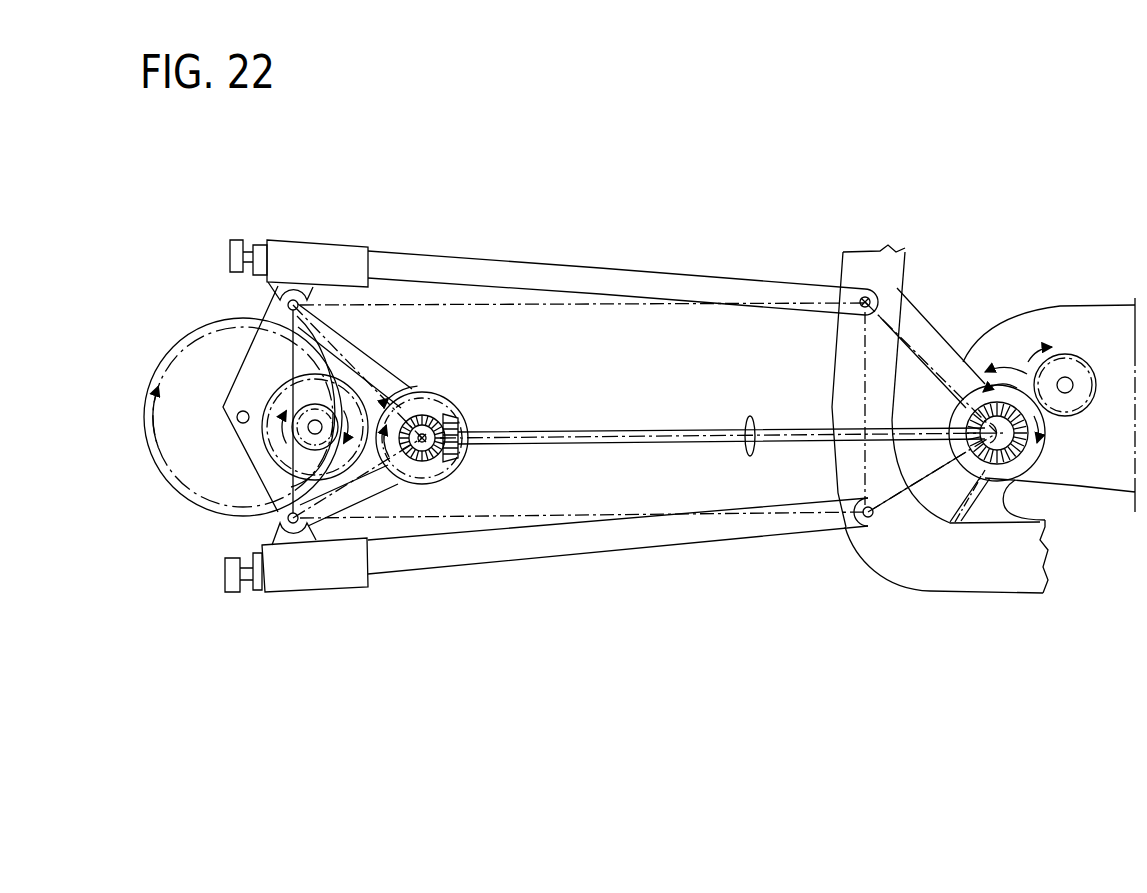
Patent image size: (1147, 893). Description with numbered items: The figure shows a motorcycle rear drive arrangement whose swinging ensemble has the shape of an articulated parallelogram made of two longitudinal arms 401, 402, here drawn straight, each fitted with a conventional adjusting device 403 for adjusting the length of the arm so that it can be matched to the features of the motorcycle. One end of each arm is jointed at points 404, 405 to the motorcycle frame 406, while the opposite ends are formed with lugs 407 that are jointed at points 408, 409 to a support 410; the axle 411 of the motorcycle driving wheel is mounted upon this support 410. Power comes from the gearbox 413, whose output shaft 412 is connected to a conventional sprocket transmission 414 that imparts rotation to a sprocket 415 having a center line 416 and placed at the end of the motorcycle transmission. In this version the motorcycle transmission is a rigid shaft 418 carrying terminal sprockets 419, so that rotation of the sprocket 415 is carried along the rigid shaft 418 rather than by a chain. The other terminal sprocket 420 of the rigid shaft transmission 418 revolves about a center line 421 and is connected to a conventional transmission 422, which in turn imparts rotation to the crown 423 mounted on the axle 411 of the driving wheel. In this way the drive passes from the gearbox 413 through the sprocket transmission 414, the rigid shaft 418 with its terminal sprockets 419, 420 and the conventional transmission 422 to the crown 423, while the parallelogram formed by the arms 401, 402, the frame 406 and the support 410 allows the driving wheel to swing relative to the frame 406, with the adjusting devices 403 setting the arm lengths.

The longitudinal arm 401 is at (508, 262).
The longitudinal arm 402 is at (488, 565).
The adjusting device 403 is at (332, 242).
The joint point 404 is at (880, 297).
The joint point 405 is at (858, 528).
The motorcycle frame 406 is at (930, 590).
The lug 407 is at (275, 288).
The joint point 408 is at (288, 305).
The joint point 409 is at (287, 513).
The support 410 is at (243, 369).
The axle 411 is at (241, 422).
The output shaft 412 is at (1068, 382).
The gearbox 413 is at (1088, 482).
The sprocket transmission 414 is at (1042, 455).
The sprocket 415 is at (1046, 524).
The center line 416 is at (938, 528).
The rigid shaft 418 is at (558, 437).
The terminal sprocket 419 is at (452, 424).
The terminal sprocket 420 is at (419, 412).
The center line 421 is at (426, 452).
The conventional transmission 422 is at (342, 362).
The crown 423 is at (148, 400).